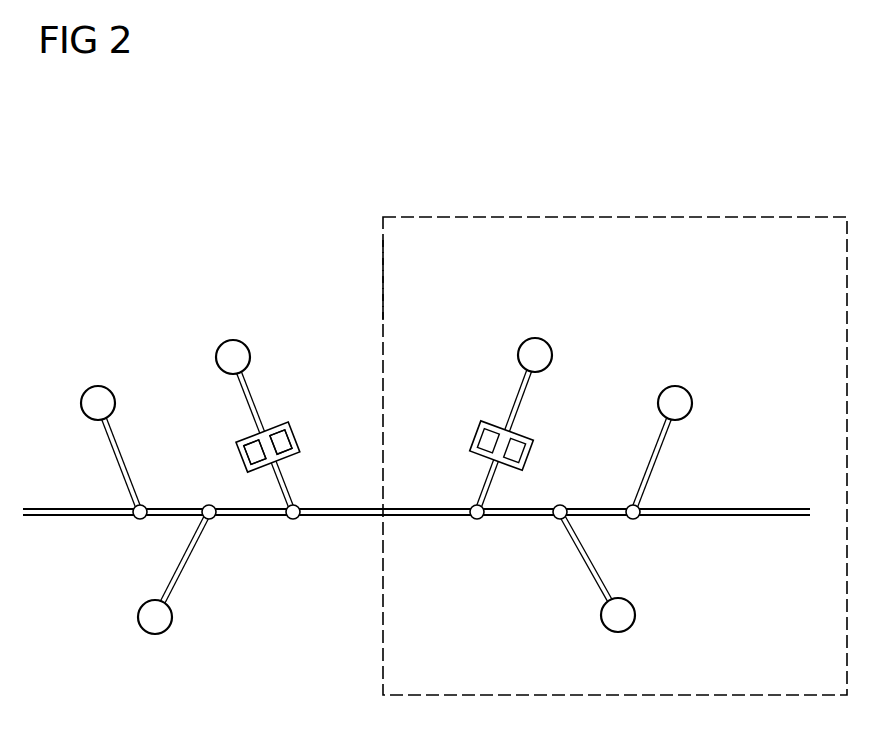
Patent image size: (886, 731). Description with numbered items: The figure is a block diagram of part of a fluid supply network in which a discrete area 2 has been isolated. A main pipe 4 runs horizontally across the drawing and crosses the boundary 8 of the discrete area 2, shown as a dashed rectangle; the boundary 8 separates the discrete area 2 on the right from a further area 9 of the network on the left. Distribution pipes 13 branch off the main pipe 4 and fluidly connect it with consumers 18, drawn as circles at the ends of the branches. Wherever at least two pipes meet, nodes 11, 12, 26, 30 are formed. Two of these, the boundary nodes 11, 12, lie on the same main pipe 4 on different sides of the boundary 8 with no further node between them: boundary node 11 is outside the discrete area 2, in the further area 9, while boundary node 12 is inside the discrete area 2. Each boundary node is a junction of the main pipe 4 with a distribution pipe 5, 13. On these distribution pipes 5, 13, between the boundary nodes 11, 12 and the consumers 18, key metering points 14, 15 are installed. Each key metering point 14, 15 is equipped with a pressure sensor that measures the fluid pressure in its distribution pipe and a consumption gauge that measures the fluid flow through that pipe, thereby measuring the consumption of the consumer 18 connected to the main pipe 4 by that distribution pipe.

The discrete area 2 is at (785, 200).
The main pipe 4 is at (62, 516).
The distribution pipe 5 is at (288, 485).
The boundary 8 is at (384, 313).
The further area 9 is at (165, 200).
The boundary node 11 is at (295, 520).
The boundary node 12 is at (475, 520).
The distribution pipes 13 is at (118, 465).
The key metering point 14 is at (490, 425).
The key metering point 15 is at (272, 425).
The consumers 18 is at (82, 400).
The node 26 is at (208, 505).
The node 30 is at (560, 505).